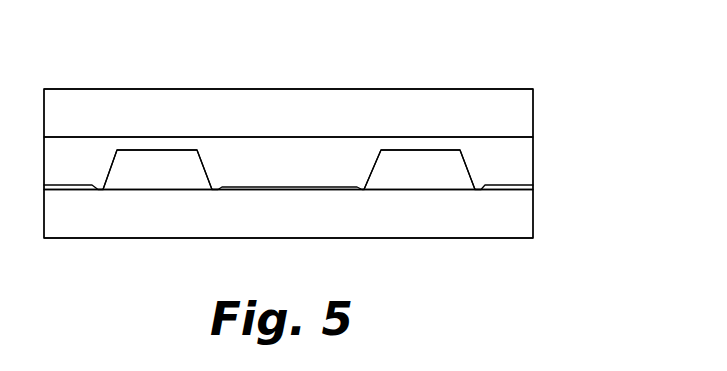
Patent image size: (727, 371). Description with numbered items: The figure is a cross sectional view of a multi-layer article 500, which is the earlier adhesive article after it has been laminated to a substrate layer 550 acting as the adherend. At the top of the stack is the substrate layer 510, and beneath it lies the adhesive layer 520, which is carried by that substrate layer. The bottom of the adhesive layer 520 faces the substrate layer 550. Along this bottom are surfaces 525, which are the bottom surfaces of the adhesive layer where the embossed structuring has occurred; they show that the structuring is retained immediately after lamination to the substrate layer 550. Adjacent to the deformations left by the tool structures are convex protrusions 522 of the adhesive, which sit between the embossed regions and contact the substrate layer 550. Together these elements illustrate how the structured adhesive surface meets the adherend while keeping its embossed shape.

The multi-layer article 500 is at (549, 56).
The substrate layer 510 is at (533, 115).
The adhesive layer 520 is at (533, 162).
The convex protrusions 522 is at (363, 190).
The surfaces 525 is at (158, 150).
The substrate layer 550 is at (503, 223).